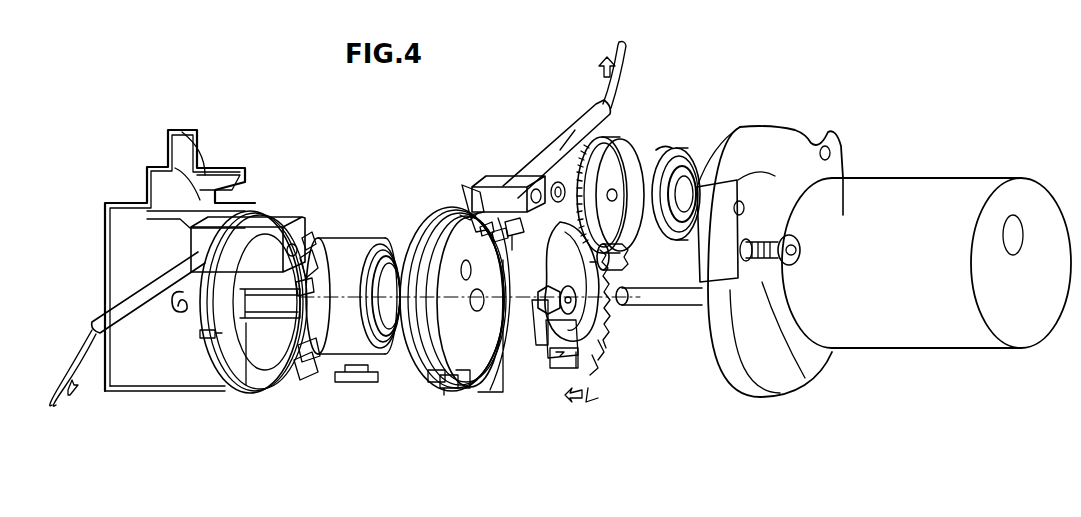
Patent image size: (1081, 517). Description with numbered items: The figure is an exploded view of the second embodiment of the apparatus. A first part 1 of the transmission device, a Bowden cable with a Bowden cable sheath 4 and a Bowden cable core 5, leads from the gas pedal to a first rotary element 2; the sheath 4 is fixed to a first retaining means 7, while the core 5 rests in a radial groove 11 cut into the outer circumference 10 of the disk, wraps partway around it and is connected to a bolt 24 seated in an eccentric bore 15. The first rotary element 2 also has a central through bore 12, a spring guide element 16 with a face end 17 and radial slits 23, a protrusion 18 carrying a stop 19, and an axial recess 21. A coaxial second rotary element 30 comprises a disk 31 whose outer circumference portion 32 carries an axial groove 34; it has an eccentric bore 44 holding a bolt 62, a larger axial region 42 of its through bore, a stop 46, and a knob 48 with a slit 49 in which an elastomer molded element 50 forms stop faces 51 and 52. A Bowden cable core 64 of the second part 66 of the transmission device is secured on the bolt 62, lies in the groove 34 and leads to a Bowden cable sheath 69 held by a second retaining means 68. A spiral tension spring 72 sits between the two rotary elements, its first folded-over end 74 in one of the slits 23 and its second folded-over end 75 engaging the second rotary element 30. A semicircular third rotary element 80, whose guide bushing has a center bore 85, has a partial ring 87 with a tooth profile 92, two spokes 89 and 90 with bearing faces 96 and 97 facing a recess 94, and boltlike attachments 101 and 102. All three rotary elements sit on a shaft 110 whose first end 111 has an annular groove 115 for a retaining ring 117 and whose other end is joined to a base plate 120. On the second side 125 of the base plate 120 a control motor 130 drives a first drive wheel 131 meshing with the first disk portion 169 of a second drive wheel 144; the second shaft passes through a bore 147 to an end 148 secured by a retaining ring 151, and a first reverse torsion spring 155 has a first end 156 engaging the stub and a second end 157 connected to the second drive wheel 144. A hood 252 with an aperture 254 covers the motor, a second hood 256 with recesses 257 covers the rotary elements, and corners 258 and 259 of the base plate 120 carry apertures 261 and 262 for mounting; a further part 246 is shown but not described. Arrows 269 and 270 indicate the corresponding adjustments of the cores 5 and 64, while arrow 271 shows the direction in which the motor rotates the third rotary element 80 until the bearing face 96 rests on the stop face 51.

The first part of the transmission device 1 is at (90, 300).
The first rotary element 2 is at (262, 402).
The Bowden cable sheath 4 is at (155, 282).
The Bowden cable core 5 is at (74, 352).
The first retaining means 7 is at (248, 244).
The outer circumference 10 is at (208, 358).
The radial groove 11 is at (216, 370).
The central through bore 12 is at (325, 282).
The eccentric bore 15 is at (247, 330).
The spring guide element 16 is at (322, 226).
The face end 17 is at (326, 258).
The protrusion 18 is at (294, 375).
The stop 19 is at (312, 356).
The axial recess 21 is at (242, 385).
The radial slits 23 is at (270, 302).
The bolt 24 is at (203, 334).
The second rotary element 30 is at (501, 399).
The disk 31 is at (424, 238).
The outer circumference portion 32 is at (418, 368).
The axial groove 34 is at (427, 216).
The axial region 42 is at (468, 314).
The eccentric bore 44 is at (444, 395).
The stop 46 is at (432, 383).
The knob 48 is at (470, 205).
The slit 49 is at (496, 242).
The elastomer molded element 50 is at (468, 273).
The stop face 51 is at (480, 237).
The stop face 52 is at (508, 250).
The bolt 62 is at (462, 390).
The Bowden cable core 64 is at (625, 60).
The second part of the transmission device 66 is at (568, 116).
The second retaining means 68 is at (505, 185).
The Bowden cable sheath 69 is at (552, 140).
The tension spring 72 is at (351, 296).
The first folded-over end 74 is at (380, 296).
The second folded-over end 75 is at (356, 383).
The third rotary element 80 is at (559, 386).
The center bore 85 is at (578, 302).
The partial ring 87 is at (600, 344).
The spoke 89 is at (536, 300).
The spoke 90 is at (546, 350).
The tooth profile 92 is at (596, 390).
The recess 94 is at (606, 326).
The bearing face 96 is at (568, 281).
The bearing face 97 is at (594, 362).
The boltlike attachment 101 is at (540, 325).
The boltlike attachment 102 is at (552, 368).
The shaft 110 is at (680, 316).
The first end 111 is at (628, 292).
The annular groove 115 is at (645, 298).
The retaining ring 117 is at (178, 300).
The base plate 120 is at (803, 402).
The second side 125 is at (820, 376).
The control motor 130 is at (926, 263).
The first drive wheel 131 is at (628, 256).
The second drive wheel 144 is at (629, 140).
The bore 147 is at (617, 195).
The end 148 is at (762, 262).
The retaining ring 151 is at (560, 176).
The first reverse torsion spring 155 is at (673, 140).
The first end 156 is at (706, 218).
The second end 157 is at (700, 150).
The first disk portion 169 is at (615, 126).
The screw head 246 is at (800, 245).
The hood 252 is at (965, 350).
The aperture 254 is at (1010, 252).
The second hood 256 is at (150, 392).
The recesses 257 is at (232, 196).
The corner 258 is at (740, 185).
The corner 259 is at (813, 134).
The aperture 261 is at (746, 208).
The aperture 262 is at (832, 150).
The arrow 269 is at (76, 398).
The arrow 270 is at (600, 70).
The arrow 271 is at (580, 405).